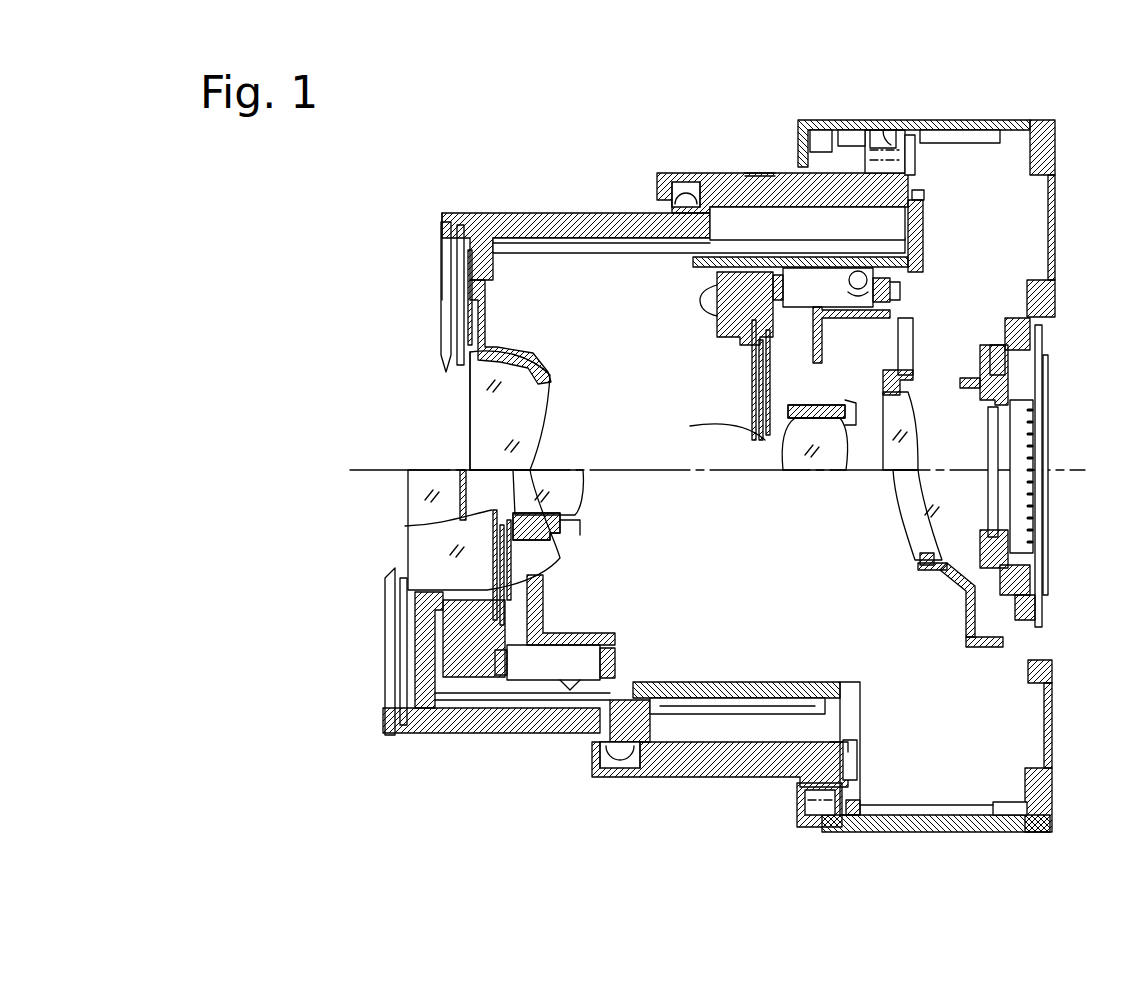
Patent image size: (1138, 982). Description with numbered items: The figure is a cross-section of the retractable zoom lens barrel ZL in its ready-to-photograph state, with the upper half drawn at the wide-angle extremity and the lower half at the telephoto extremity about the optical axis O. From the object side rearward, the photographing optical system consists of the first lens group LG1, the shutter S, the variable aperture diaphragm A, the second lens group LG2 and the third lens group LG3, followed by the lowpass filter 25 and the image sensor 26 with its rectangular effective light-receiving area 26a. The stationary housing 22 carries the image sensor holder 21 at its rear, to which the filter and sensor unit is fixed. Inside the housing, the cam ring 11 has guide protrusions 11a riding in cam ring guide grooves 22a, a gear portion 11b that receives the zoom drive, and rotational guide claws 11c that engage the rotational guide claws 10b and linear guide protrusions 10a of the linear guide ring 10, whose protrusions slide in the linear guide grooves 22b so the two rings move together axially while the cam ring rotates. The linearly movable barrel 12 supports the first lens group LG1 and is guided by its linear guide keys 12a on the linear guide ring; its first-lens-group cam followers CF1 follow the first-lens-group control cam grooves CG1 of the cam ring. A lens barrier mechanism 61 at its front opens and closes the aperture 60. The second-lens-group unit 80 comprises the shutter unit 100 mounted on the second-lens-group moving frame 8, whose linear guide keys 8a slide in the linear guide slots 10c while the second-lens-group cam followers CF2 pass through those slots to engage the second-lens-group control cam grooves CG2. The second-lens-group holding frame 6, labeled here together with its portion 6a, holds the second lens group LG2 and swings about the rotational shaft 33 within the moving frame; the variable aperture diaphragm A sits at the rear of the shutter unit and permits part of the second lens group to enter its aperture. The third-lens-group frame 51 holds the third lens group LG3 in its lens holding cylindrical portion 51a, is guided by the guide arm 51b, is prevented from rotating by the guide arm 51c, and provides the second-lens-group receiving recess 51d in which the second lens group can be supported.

The zoom lens barrel ZL is at (366, 142).
The optical axis O is at (368, 466).
The linearly movable barrel 12 is at (548, 213).
The linear guide keys 12a is at (602, 244).
The cam ring 11 is at (737, 173).
The guide protrusions 11a is at (886, 137).
The gear portion 11b is at (826, 830).
The rotational guide claws 11c is at (850, 746).
The linear guide ring 10 is at (703, 262).
The linear guide protrusions 10a is at (911, 155).
The rotational guide claws 10b is at (850, 766).
The linear guide slots 10c is at (757, 172).
The housing 22 is at (963, 120).
The cam ring guide grooves 22a is at (893, 130).
The linear guide grooves 22b is at (960, 141).
The image sensor holder 21 is at (1058, 297).
The second-lens-group moving frame 8 is at (907, 268).
The linear guide keys 8a is at (925, 245).
The second-lens-group unit 80 is at (660, 526).
The rotational shaft 33 is at (838, 297).
The shutter unit 100 is at (742, 343).
The second-lens-group holding frame 6 is at (822, 407).
The lens holder portion 6a is at (679, 472).
The lens barrier mechanism 61 is at (462, 343).
The aperture 60 is at (453, 470).
The third-lens-group frame 51 is at (917, 568).
The lens holding cylindrical portion 51a is at (928, 574).
The guide arm 51b is at (908, 345).
The guide arm 51c is at (978, 648).
The second-lens-group receiving recess 51d is at (965, 612).
The lowpass filter 25 is at (988, 446).
The image sensor 26 is at (1013, 459).
The effective light-receiving area 26a is at (1002, 496).
The first-lens-group cam followers CF1 is at (681, 180).
The first-lens-group control cam grooves CG1 is at (694, 180).
The second-lens-group cam followers CF2 is at (807, 223).
The second-lens-group control cam grooves CG2 is at (923, 196).
The first lens group LG1 is at (488, 433).
The second lens group LG2 is at (815, 466).
The third lens group LG3 is at (905, 521).
The variable aperture diaphragm A is at (512, 515).
The shutter S is at (573, 477).